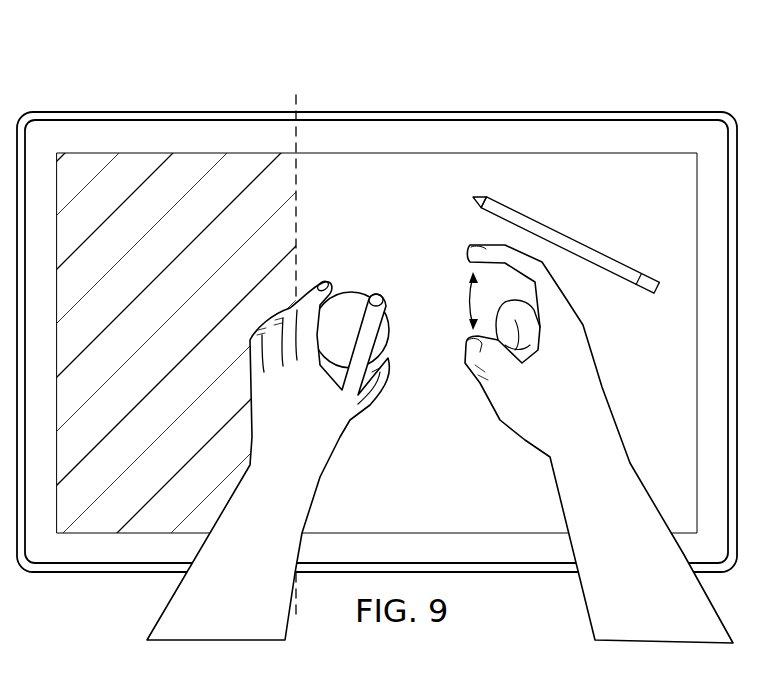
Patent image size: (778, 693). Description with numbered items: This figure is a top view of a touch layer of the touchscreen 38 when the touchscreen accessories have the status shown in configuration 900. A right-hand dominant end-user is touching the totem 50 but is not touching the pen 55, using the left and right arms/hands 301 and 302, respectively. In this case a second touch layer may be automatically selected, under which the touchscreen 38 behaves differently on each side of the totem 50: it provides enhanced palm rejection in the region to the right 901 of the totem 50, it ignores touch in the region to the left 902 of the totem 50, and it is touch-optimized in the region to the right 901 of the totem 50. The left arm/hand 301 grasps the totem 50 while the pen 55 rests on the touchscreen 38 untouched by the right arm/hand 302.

The configuration 900 is at (175, 79).
The touchscreen 38 is at (557, 111).
The left region 902 is at (198, 231).
The right region 901 is at (671, 231).
The totem 50 is at (347, 290).
The left arm/hand 301 is at (275, 312).
The right arm/hand 302 is at (603, 400).
The pen 55 is at (550, 230).